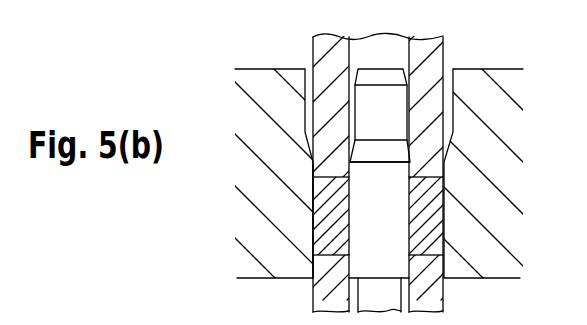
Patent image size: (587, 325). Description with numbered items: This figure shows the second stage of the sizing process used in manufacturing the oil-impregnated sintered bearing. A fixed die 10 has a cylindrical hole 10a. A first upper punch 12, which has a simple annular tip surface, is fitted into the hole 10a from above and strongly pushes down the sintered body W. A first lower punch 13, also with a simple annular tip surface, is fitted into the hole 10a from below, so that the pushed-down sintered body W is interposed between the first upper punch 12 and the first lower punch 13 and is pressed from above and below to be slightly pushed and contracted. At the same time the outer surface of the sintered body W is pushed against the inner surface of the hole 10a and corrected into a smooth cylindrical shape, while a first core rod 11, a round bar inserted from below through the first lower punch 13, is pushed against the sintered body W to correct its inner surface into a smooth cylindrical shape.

The die 10 is at (503, 80).
The cylindrical hole 10a is at (313, 268).
The first core rod 11 is at (372, 205).
The first upper punch 12 is at (327, 58).
The first lower punch 13 is at (433, 287).
The sintered body W is at (435, 213).